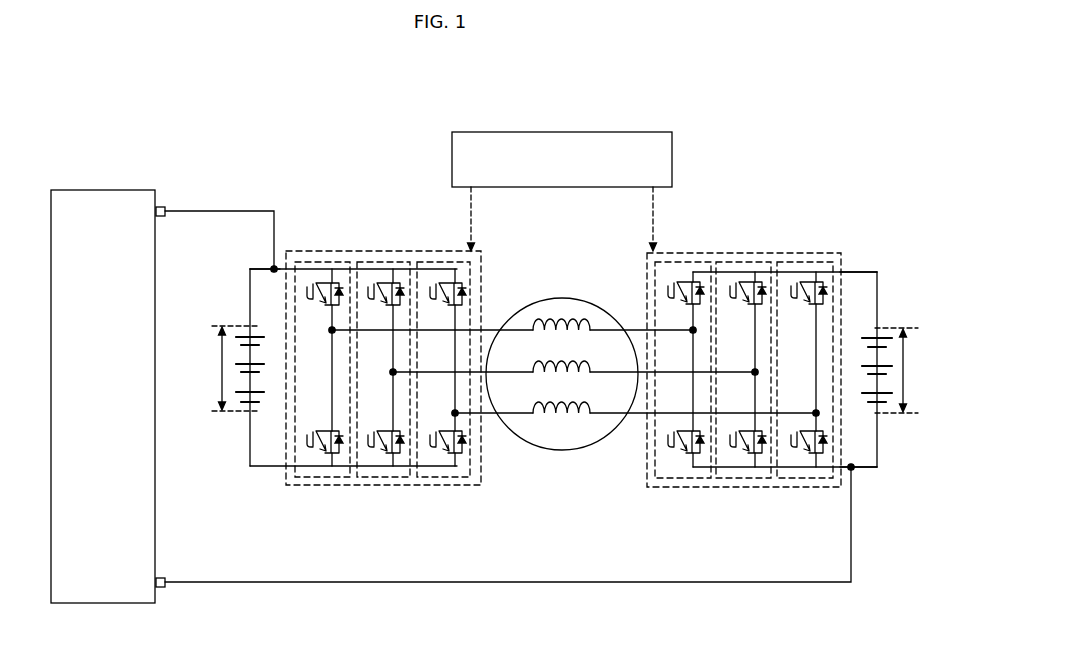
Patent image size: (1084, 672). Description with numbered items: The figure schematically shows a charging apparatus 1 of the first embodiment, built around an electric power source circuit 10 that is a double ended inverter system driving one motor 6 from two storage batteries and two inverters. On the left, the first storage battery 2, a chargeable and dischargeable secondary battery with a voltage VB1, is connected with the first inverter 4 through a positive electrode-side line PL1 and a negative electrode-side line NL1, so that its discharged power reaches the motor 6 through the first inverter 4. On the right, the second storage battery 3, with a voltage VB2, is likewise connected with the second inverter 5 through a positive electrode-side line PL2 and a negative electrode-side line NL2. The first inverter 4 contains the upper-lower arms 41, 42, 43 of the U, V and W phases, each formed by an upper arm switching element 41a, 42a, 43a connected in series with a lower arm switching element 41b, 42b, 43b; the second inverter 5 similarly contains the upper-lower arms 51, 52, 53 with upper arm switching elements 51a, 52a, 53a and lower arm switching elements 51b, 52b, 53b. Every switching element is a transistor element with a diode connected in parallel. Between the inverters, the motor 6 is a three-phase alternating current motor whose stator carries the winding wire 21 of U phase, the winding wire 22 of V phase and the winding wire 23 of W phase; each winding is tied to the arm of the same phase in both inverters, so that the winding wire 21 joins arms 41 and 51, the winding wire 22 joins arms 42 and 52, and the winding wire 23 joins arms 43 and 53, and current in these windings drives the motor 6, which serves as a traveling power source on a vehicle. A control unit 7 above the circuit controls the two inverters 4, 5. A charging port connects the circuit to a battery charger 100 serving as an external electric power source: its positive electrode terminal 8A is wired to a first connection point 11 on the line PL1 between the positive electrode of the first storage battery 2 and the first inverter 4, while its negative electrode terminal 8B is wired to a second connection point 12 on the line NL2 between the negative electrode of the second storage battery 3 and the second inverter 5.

The charging apparatus 1 is at (853, 131).
The electric power source circuit 10 is at (806, 188).
The battery charger 100 is at (104, 190).
The first storage battery 2 is at (244, 326).
The second storage battery 3 is at (880, 328).
The first inverter 4 is at (408, 368).
The second inverter 5 is at (733, 368).
The motor 6 is at (562, 360).
The control unit 7 is at (622, 132).
The positive electrode terminal 8A is at (166, 207).
The negative electrode terminal 8B is at (164, 587).
The first connection point 11 is at (273, 271).
The second connection point 12 is at (851, 466).
The winding wire of U phase 21 is at (548, 319).
The winding wire of V phase 22 is at (578, 362).
The winding wire of W phase 23 is at (570, 424).
The upper-lower arm of U phase 41 is at (408, 384).
The upper-lower arm of V phase 42 is at (441, 384).
The upper-lower arm of W phase 43 is at (474, 384).
The switching element 41a is at (308, 290).
The switching element 42a is at (369, 290).
The switching element 43a is at (431, 290).
The switching element 41b is at (308, 440).
The switching element 42b is at (369, 440).
The switching element 43b is at (431, 440).
The upper-lower arm of U phase 51 is at (650, 385).
The upper-lower arm of V phase 52 is at (680, 385).
The upper-lower arm of W phase 53 is at (711, 385).
The switching element 51a is at (669, 289).
The switching element 52a is at (731, 289).
The switching element 53a is at (792, 289).
The switching element 51b is at (669, 440).
The switching element 52b is at (731, 440).
The switching element 53b is at (792, 440).
The positive electrode-side line PL1 is at (272, 269).
The negative electrode-side line NL1 is at (254, 466).
The positive electrode-side line PL2 is at (877, 272).
The negative electrode-side line NL2 is at (868, 467).
The voltage of the first storage battery VB1 is at (216, 368).
The voltage of the second storage battery VB2 is at (913, 370).